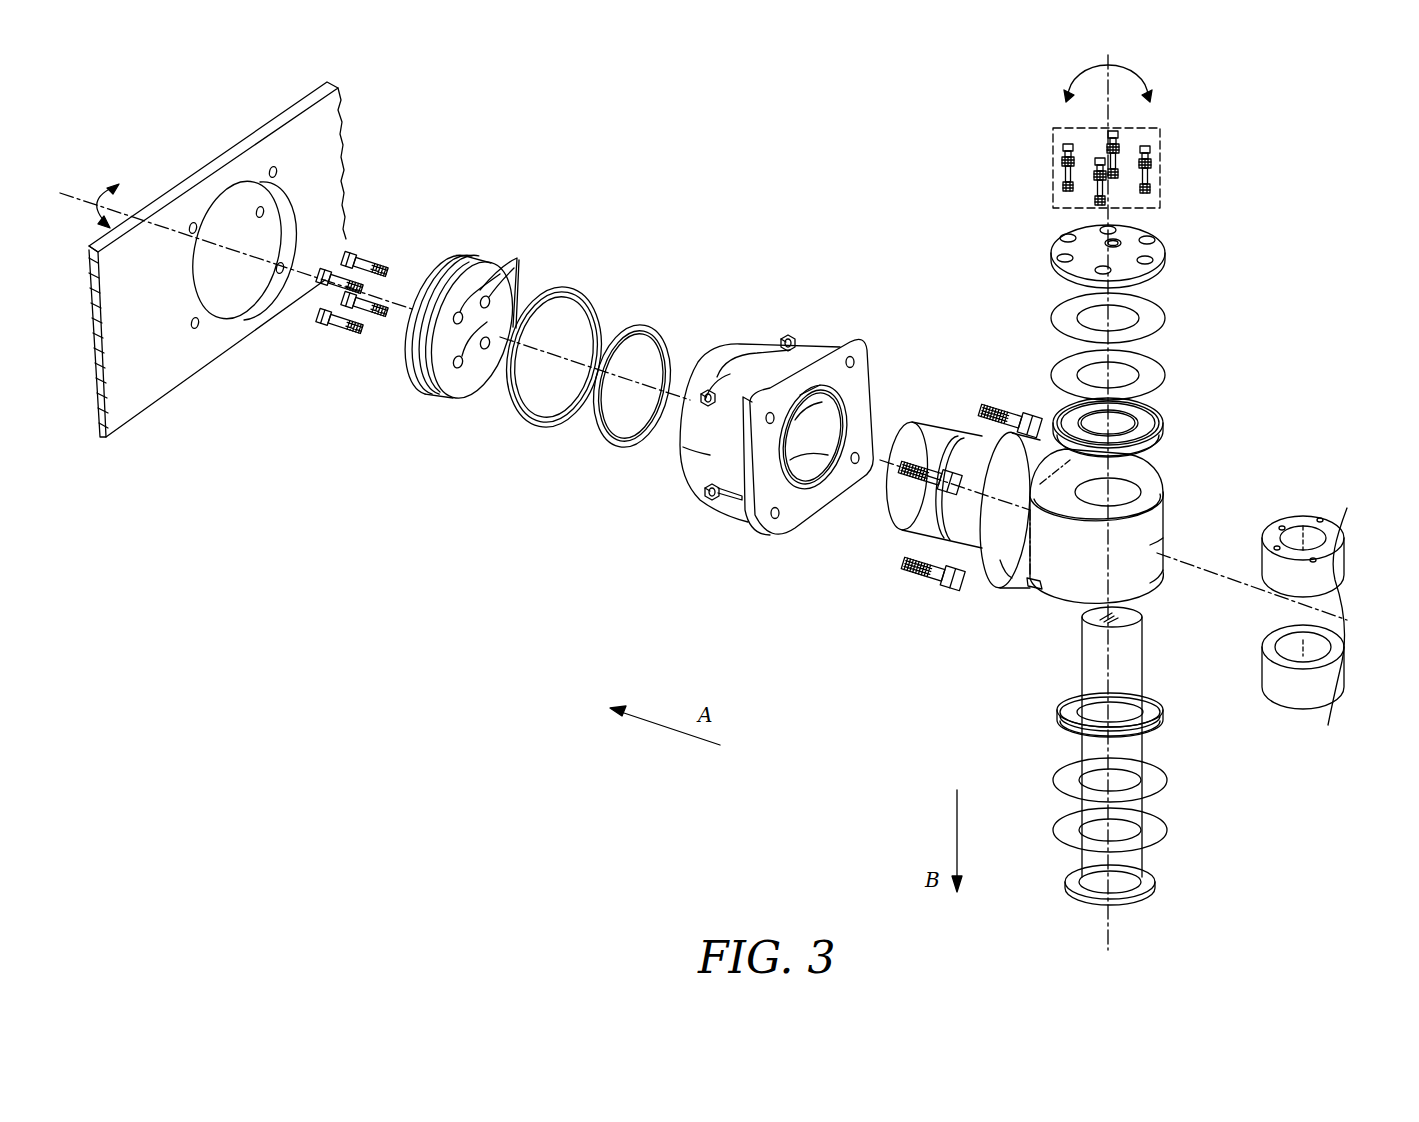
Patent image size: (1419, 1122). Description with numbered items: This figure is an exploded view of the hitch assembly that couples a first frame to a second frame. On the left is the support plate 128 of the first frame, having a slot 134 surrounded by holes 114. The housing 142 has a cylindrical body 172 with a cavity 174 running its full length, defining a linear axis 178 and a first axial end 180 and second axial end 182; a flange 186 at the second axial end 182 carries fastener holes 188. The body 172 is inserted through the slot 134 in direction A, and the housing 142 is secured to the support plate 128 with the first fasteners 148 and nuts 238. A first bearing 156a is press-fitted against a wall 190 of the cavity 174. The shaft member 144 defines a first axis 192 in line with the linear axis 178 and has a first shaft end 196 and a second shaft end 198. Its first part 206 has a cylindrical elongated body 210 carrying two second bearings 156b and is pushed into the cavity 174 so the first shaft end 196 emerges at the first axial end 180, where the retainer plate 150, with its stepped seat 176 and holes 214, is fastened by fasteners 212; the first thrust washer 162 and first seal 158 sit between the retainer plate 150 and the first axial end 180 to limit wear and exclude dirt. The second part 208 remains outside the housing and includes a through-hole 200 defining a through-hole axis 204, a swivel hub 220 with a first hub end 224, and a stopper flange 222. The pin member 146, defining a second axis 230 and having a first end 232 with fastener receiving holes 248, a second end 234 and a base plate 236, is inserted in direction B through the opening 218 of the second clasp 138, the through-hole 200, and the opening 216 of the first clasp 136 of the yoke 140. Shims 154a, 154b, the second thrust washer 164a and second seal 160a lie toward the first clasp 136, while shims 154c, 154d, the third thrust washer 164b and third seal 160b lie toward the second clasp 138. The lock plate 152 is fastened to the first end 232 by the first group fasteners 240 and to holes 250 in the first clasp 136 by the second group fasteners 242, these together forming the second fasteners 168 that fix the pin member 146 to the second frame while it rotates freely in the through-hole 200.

The holes 114 is at (282, 165).
The support plate 128 is at (312, 132).
The slot 134 is at (270, 217).
The linear axis 178 is at (75, 193).
The fasteners 212 is at (362, 259).
The retainer plate 150 is at (448, 256).
The stepped seat 176 is at (438, 396).
The holes 214 is at (516, 258).
The first seal 158 is at (556, 287).
The first thrust washer 162 is at (630, 325).
The first axial end 180 is at (697, 365).
The housing 142 is at (745, 333).
The body 172 is at (760, 342).
The nuts 238 is at (790, 336).
The flange 186 is at (705, 485).
The cavity 174 is at (818, 360).
The fastener holes 188 is at (765, 422).
The second axial end 182 is at (735, 500).
The wall 190 is at (750, 520).
The first axis 192 is at (803, 526).
The first bearing 156a is at (866, 425).
The first shaft end 196 is at (914, 424).
The first part 206 is at (965, 440).
The elongated body 210 is at (942, 425).
The second bearing 156b is at (892, 505).
The first fasteners 148 is at (1016, 415).
The shaft member 144 is at (889, 560).
The through-hole 200 is at (1162, 474).
The first hub end 224 is at (1142, 492).
The second shaft end 198 is at (1160, 540).
The swivel hub 220 is at (1168, 578).
The stopper flange 222 is at (1005, 563).
The second part 208 is at (1048, 588).
The first end 232 is at (1087, 608).
The pin member 146 is at (1128, 658).
The fastener receiving holes 248 is at (1120, 617).
The through-hole axis 204 is at (1118, 122).
The second fasteners 168 is at (1053, 150).
The second group fasteners 242 is at (1062, 162).
The first group fasteners 240 is at (1103, 160).
The lock plate 152 is at (1165, 250).
The shim 154a is at (1165, 318).
The shim 154b is at (1165, 375).
The second seal 160a is at (1163, 420).
The second thrust washer 164a is at (1160, 452).
The third thrust washer 164b is at (1160, 692).
The third seal 160b is at (1163, 720).
The shim 154c is at (1168, 781).
The shim 154d is at (1168, 831).
The base plate 236 is at (1158, 880).
The second end 234 is at (1064, 885).
The second axis 230 is at (1110, 945).
The first clasp 136 is at (1315, 570).
The holes 250 is at (1313, 558).
The opening 216 is at (1347, 508).
The second clasp 138 is at (1312, 688).
The opening 218 is at (1330, 656).
The yoke 140 is at (1300, 720).